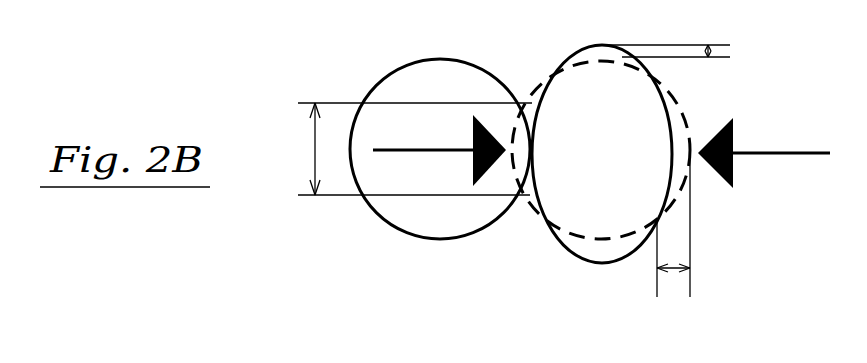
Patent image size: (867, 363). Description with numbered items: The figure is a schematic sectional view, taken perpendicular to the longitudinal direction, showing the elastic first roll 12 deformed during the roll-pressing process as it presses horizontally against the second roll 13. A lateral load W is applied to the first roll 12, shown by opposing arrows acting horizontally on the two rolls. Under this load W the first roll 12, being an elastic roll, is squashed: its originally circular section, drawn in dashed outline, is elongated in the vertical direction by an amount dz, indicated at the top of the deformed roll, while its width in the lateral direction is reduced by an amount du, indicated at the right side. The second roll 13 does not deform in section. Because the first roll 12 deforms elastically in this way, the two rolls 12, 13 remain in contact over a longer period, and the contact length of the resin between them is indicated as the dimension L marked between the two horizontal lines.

The first roll 12 is at (612, 248).
The second roll 13 is at (440, 227).
The contact length L is at (296, 149).
The lateral load W is at (601, 151).
The vertical elongation δz dz is at (682, 51).
The lateral width reduction δu du is at (673, 243).